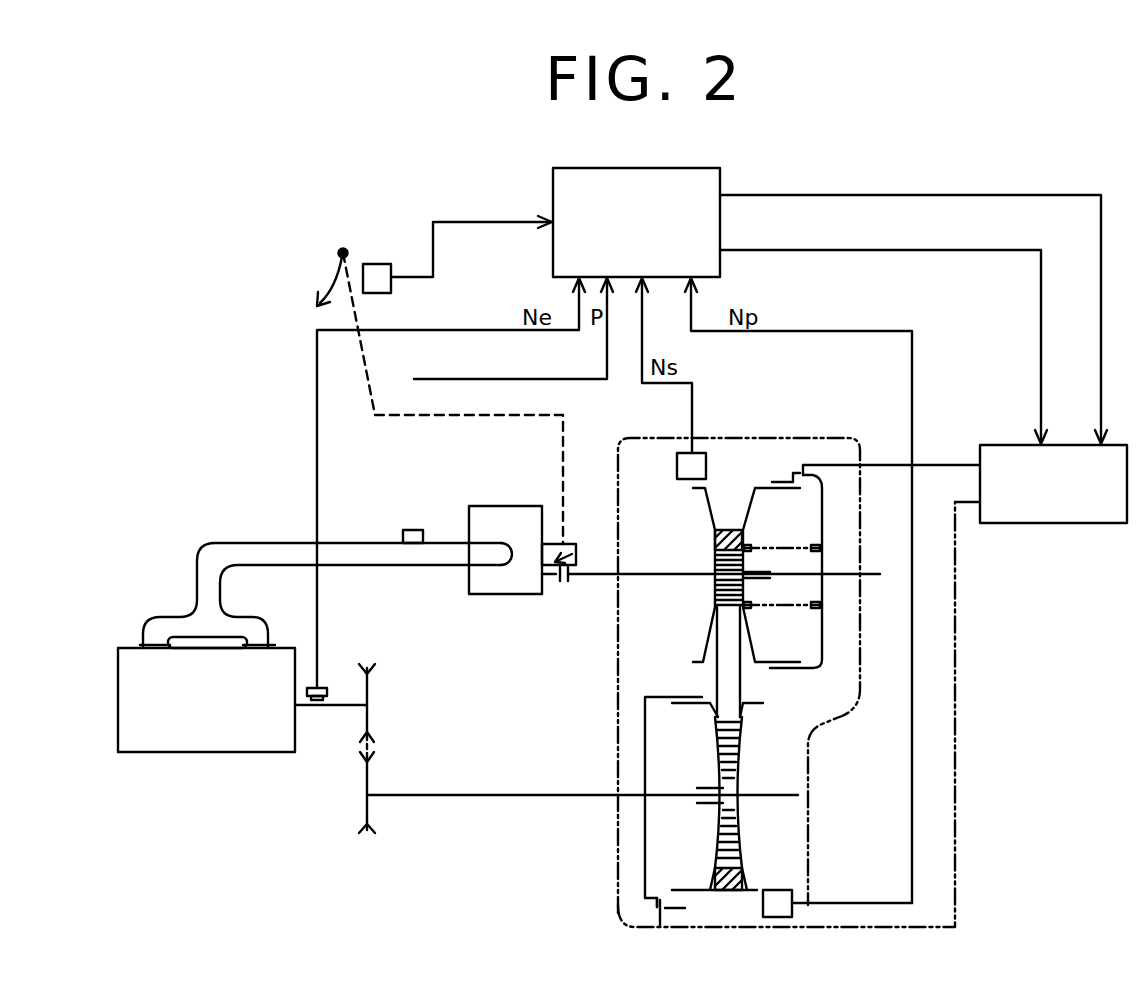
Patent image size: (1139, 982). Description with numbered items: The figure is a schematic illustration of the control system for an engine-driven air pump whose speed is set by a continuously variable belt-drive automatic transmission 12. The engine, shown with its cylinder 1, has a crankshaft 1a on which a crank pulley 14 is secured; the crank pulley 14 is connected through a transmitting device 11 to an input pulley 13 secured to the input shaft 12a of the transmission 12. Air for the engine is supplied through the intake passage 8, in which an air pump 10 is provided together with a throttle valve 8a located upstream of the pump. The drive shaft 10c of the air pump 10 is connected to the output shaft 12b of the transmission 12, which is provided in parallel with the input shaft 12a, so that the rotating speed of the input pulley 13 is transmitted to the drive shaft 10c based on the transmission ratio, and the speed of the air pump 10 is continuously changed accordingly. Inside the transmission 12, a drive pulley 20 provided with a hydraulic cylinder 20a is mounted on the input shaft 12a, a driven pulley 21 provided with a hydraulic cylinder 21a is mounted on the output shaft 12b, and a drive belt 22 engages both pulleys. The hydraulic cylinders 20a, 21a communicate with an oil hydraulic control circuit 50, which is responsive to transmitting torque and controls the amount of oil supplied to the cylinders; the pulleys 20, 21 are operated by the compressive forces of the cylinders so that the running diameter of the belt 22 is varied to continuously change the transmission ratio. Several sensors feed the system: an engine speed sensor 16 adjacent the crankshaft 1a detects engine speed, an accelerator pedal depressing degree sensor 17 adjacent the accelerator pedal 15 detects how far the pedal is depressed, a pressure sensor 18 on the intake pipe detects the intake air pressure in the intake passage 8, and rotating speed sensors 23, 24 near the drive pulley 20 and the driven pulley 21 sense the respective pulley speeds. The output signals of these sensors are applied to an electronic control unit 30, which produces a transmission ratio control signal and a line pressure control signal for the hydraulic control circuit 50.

The cylinder 1 is at (120, 693).
The crankshaft 1a is at (327, 710).
The intake passage 8 is at (551, 542).
The throttle valve 8a is at (588, 544).
The air pump 10 is at (488, 506).
The drive shaft 10c is at (560, 588).
The transmitting device 11 is at (370, 747).
The continuously variable belt-drive transmission 12 is at (770, 438).
The input shaft 12a is at (553, 794).
The output shaft 12b is at (596, 578).
The input pulley 13 is at (368, 776).
The crank pulley 14 is at (366, 674).
The accelerator pedal 15 is at (334, 272).
The engine speed sensor 16 is at (322, 687).
The accelerator pedal depressing degree sensor 17 is at (376, 264).
The pressure sensor 18 is at (415, 530).
The drive pulley 20 is at (744, 706).
The hydraulic cylinder 20a is at (643, 716).
The driven pulley 21 is at (706, 522).
The hydraulic cylinder 21a is at (822, 528).
The drive belt 22 is at (714, 670).
The rotating speed sensor 23 is at (780, 890).
The rotating speed sensor 24 is at (706, 468).
The electronic control unit 30 is at (708, 168).
The hydraulic control circuit 50 is at (1062, 523).